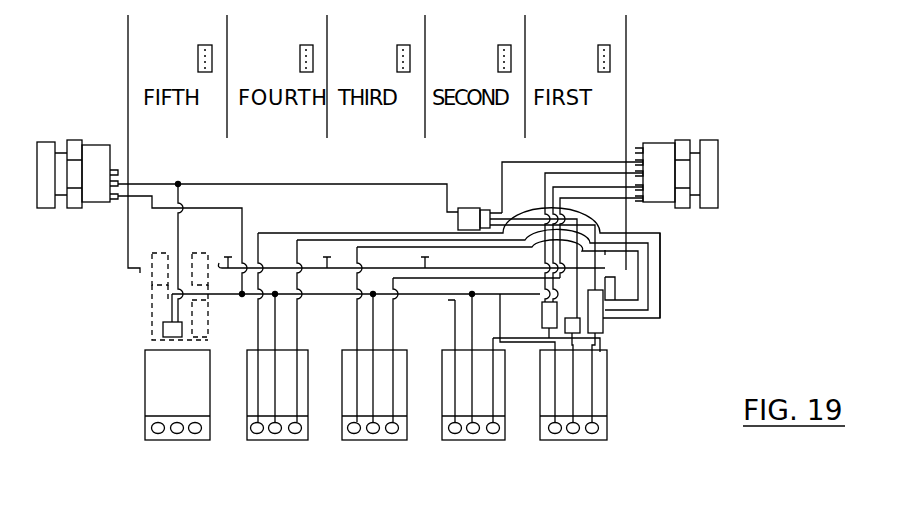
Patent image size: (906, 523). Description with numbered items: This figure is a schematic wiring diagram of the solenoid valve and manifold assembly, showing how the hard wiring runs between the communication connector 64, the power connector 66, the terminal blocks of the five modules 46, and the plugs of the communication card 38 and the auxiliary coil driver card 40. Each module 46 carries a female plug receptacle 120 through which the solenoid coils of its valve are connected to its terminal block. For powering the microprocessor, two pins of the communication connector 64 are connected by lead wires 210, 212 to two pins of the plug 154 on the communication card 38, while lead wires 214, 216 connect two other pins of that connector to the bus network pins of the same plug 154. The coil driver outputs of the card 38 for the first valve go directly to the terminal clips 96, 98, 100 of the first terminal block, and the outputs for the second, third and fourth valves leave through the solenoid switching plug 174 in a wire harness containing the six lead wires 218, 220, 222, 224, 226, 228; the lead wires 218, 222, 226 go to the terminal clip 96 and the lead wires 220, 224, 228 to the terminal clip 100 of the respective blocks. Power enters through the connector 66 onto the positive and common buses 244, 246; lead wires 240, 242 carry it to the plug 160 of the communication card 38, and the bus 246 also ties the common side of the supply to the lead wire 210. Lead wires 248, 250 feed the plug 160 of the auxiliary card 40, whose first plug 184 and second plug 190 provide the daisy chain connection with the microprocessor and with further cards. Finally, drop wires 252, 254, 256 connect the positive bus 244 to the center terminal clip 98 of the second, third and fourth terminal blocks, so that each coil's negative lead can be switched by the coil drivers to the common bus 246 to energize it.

The female plug receptacle 120 is at (207, 45).
The module 46 is at (549, 50).
The quick connect electrical connector 66 is at (80, 141).
The quick connect electrical connector 64 is at (718, 146).
The lead wire 246 is at (322, 182).
The lead wire 244 is at (243, 217).
The lead wire 250 is at (178, 232).
The first plug 184 is at (205, 250).
The second plug 190 is at (152, 271).
The auxiliary coil driver card 40 is at (150, 303).
The lead wire 248 is at (165, 312).
The solenoid output plug 174 is at (208, 305).
The lead wire 226 is at (208, 334).
The plug 160 is at (150, 341).
The lead wire 222 is at (357, 315).
The lead wire 228 is at (297, 332).
The lead wire 224 is at (395, 310).
The lead wire 218 is at (456, 340).
The plug connector 154 is at (542, 310).
The lead wire 212 is at (542, 171).
The lead wire 242 is at (507, 213).
The lead wire 210 is at (535, 162).
The lead wire 214 is at (612, 192).
The lead wire 216 is at (606, 201).
The communication card 38 is at (611, 256).
The lead wire 240 is at (568, 334).
The lead wire 220 is at (522, 342).
The terminal clip 96 is at (247, 442).
The center terminal 98 is at (275, 438).
The terminal clip 100 is at (295, 440).
The drop wire 256 is at (277, 393).
The drop wire 254 is at (377, 402).
The drop wire 252 is at (475, 398).